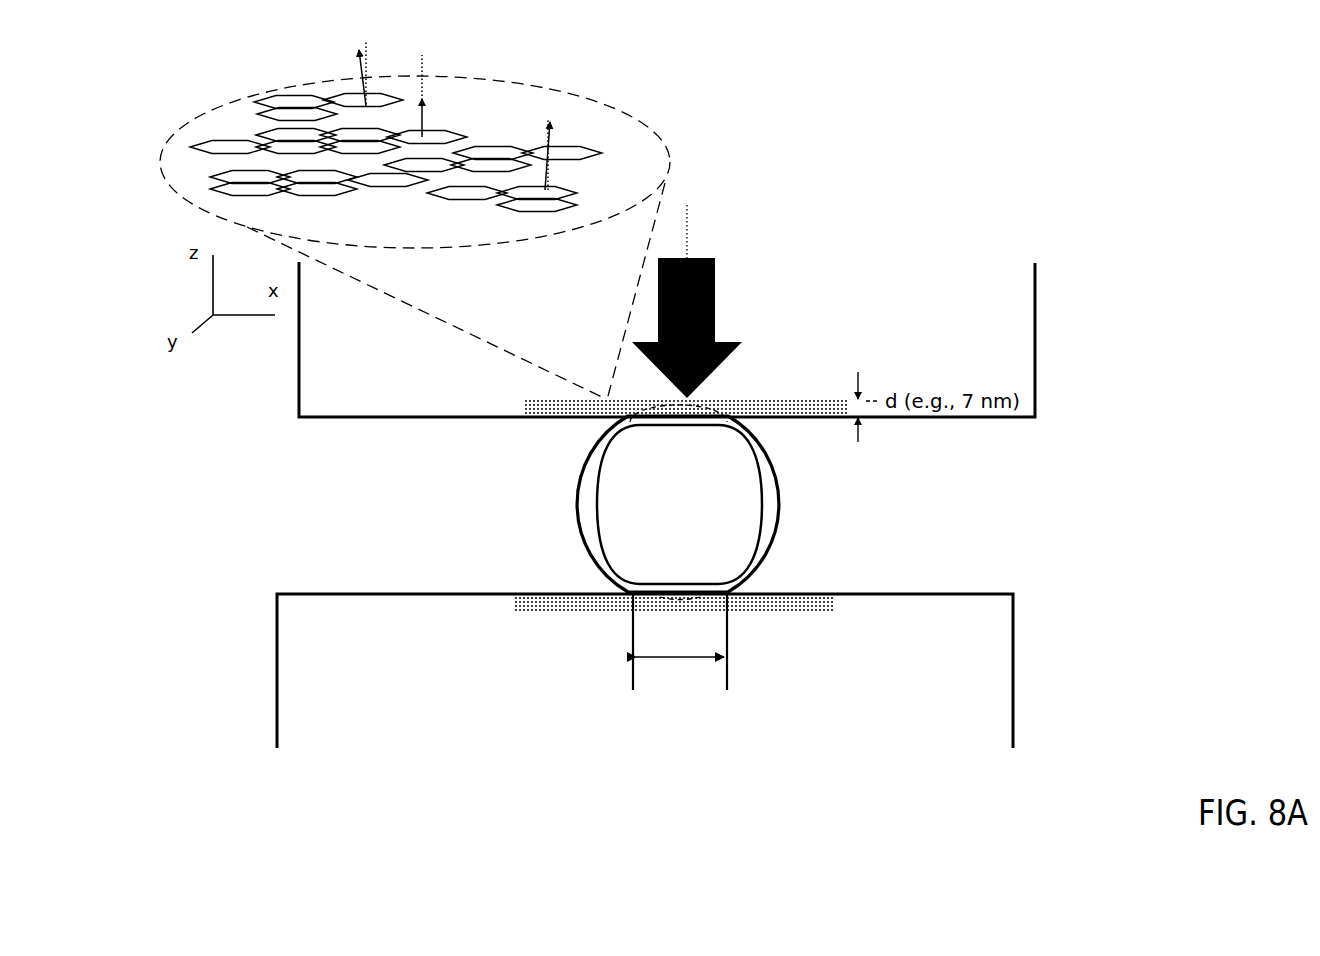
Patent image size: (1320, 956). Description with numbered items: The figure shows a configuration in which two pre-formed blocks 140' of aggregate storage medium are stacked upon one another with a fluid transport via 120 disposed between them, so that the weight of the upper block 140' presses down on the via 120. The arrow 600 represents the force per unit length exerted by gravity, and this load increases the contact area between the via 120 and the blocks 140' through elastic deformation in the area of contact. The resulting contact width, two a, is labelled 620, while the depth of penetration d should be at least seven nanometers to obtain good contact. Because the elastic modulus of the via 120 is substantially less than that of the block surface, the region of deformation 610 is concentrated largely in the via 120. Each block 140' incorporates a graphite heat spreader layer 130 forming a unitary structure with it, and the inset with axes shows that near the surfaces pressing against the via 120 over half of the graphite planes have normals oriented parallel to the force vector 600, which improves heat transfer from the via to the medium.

The via 120 is at (581, 485).
The heat spreader layer 130 is at (513, 398).
The pre-formed block 140' is at (656, 505).
The force 600 is at (706, 301).
The region of deformation 610 is at (698, 577).
The contact width 620 is at (680, 646).